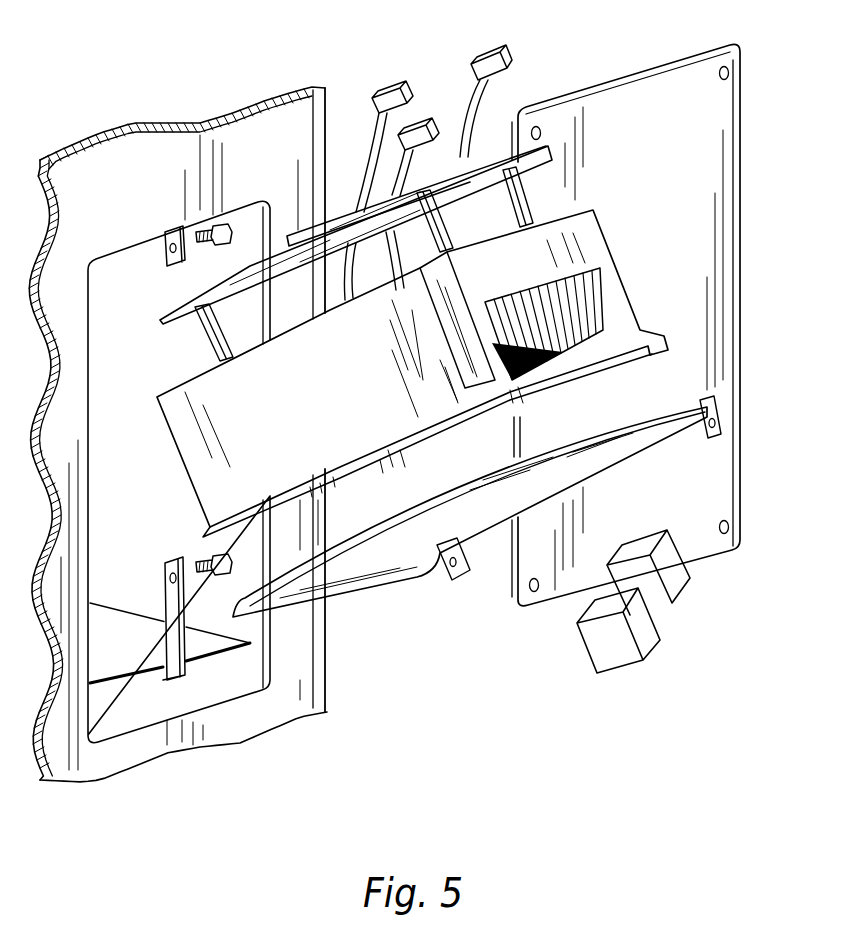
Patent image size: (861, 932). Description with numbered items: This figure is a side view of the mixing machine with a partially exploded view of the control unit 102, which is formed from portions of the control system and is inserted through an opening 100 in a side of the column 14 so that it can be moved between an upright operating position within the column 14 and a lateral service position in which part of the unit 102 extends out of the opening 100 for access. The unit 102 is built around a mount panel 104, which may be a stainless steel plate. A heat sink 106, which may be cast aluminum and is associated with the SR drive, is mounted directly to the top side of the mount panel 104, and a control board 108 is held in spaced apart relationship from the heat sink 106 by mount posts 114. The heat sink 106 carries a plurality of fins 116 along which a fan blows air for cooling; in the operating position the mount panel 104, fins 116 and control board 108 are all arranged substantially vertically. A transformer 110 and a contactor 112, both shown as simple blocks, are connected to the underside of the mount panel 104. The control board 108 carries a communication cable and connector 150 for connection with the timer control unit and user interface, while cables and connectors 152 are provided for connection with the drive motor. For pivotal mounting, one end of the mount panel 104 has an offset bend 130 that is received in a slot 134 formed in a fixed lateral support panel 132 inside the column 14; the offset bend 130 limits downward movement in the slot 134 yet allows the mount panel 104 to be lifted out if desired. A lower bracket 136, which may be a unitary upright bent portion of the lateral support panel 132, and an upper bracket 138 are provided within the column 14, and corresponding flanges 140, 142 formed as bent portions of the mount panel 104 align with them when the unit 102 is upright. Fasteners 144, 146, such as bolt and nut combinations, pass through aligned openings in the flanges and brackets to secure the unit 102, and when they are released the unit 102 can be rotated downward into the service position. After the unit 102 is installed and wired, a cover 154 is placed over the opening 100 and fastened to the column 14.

The column 14 is at (283, 122).
The opening 100 is at (88, 518).
The unit 102 is at (428, 655).
The mount panel 104 is at (603, 430).
The heat sink 106 is at (597, 243).
The control board 108 is at (350, 215).
The transformer 110 is at (648, 642).
The contactor 112 is at (683, 583).
The mount posts 114 is at (560, 200).
The fins 116 is at (545, 322).
The offset bend 130 is at (362, 578).
The lateral support panel 132 is at (186, 690).
The slot 134 is at (122, 675).
The lower bracket 136 is at (166, 593).
The upper bracket 138 is at (165, 250).
The flange 140 is at (460, 570).
The flange 142 is at (710, 430).
The fastener 144 is at (199, 563).
The fastener 146 is at (214, 244).
The communication cable and connector 150 is at (493, 68).
The cables and connectors 152 is at (427, 200).
The cover 154 is at (672, 60).